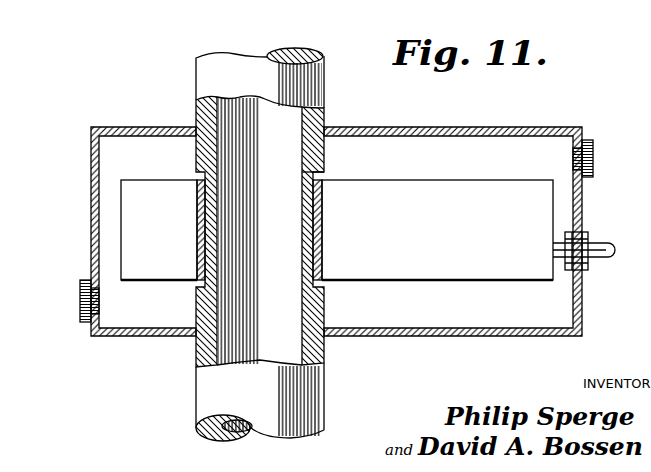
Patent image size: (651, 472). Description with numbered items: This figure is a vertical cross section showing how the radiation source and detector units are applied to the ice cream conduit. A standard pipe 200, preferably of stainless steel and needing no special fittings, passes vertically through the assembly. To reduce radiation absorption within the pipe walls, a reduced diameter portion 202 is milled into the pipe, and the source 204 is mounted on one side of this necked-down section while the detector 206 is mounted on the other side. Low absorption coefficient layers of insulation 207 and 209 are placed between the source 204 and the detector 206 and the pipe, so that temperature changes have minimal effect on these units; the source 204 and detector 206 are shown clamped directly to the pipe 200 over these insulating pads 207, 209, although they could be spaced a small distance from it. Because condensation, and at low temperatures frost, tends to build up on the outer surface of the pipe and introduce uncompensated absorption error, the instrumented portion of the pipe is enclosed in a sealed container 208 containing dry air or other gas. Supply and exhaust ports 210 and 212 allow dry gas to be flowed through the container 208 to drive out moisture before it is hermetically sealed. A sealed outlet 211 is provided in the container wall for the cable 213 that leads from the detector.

The pipe 200 is at (207, 74).
The reduced diameter portion 202 is at (313, 175).
The source 204 is at (128, 232).
The detector 206 is at (451, 271).
The insulation layer 207 is at (197, 183).
The sealed container 208 is at (151, 127).
The insulation layer 209 is at (322, 223).
The supply port 210 is at (82, 303).
The sealed outlet 211 is at (590, 264).
The exhaust port 212 is at (592, 158).
The cable 213 is at (593, 243).